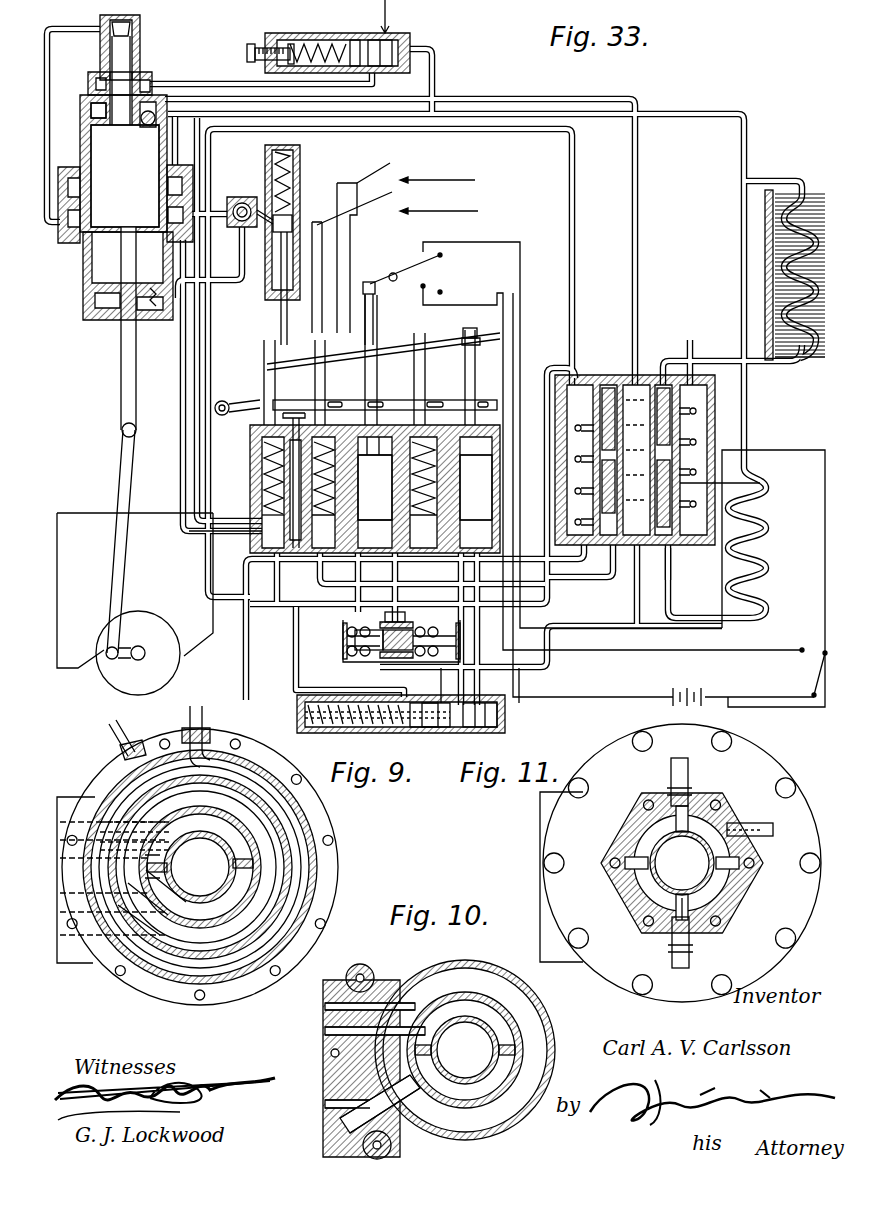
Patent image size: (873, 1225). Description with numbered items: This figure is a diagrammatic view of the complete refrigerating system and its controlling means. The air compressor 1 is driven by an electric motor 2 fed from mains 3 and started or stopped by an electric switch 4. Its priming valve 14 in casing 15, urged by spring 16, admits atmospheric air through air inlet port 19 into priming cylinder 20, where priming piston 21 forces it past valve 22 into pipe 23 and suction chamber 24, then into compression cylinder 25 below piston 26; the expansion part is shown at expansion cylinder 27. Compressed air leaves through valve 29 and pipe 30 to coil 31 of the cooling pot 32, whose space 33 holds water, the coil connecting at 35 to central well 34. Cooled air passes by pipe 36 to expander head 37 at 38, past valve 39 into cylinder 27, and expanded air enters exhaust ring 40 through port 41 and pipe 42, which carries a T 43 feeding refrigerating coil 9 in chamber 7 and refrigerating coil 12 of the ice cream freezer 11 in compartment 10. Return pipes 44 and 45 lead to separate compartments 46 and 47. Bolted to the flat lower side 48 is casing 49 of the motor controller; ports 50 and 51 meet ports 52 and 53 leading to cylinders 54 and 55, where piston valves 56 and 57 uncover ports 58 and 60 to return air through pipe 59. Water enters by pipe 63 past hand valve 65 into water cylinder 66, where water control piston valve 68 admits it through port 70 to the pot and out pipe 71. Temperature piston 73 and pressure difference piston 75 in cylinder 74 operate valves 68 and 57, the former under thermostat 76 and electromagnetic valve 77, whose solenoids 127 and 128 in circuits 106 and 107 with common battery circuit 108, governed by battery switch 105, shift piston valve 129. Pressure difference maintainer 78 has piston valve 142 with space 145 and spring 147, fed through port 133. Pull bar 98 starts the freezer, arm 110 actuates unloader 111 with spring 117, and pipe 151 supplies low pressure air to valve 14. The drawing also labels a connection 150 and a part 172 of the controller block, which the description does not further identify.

In FIG. 33, the air compressor 1 is at (115, 185).
In FIG. 33, the electric motor 2 is at (135, 559).
In FIG. 33, the mains 3 is at (398, 255).
In FIG. 33, the electric switch 4 is at (354, 244).
In FIG. 33, the refrigerating chamber 7 is at (773, 578).
In FIG. 33, the refrigerating coil 9 is at (726, 536).
In FIG. 33, the compartment 10 is at (759, 275).
In FIG. 33, the ice cream freezer 11 is at (800, 383).
In FIG. 33, the refrigerating coil 12 is at (800, 253).
In FIG. 33, the priming valve 14 is at (348, 36).
In FIG. 33, the casing 15 is at (325, 36).
In FIG. 33, the spring 16 is at (270, 35).
In FIG. 33, the air inlet port 19 is at (382, 36).
In FIG. 33, the priming cylinder 20 is at (139, 70).
In FIG. 33, the priming piston 21 is at (120, 84).
In FIG. 33, the valve 22 is at (146, 28).
In FIG. 33, the pipe 23 is at (73, 125).
In FIG. 33, the suction chamber 24 is at (55, 211).
In FIG. 33, the compression cylinder 25 is at (113, 276).
In FIG. 33, the piston 26 is at (125, 176).
In FIG. 33, the expansion cylinder 27 is at (117, 278).
In FIG. 33, the valve 29 is at (158, 318).
In FIG. 33, the pipe 30 is at (410, 363).
In FIG. 9, the pipe 30 is at (211, 734).
In FIG. 33, the coil 31 is at (595, 427).
In FIG. 9, the coil 31 is at (244, 867).
In FIG. 33, the cooling pot 32 is at (656, 428).
In FIG. 9, the cooling pot 32 is at (226, 867).
In FIG. 33, the space 33 is at (649, 460).
In FIG. 33, the central well 34 is at (637, 450).
In FIG. 9, the central well 34 is at (200, 867).
In FIG. 11, the central well 34 is at (682, 863).
In FIG. 33, the connection 35 is at (675, 581).
In FIG. 33, the pipe 36 is at (417, 242).
In FIG. 11, the pipe 36 is at (694, 781).
In FIG. 33, the expander head 37 is at (78, 108).
In FIG. 33, the joint 38 is at (261, 90).
In FIG. 33, the valve 39 is at (143, 135).
In FIG. 33, the exhaust ring 40 is at (199, 203).
In FIG. 33, the port 41 is at (187, 243).
In FIG. 33, the pipe 42 is at (456, 267).
In FIG. 33, the T 43 is at (757, 267).
In FIG. 33, the return pipe 44 is at (732, 360).
In FIG. 11, the return pipe 44 is at (701, 942).
In FIG. 33, the return pipe 45 is at (685, 566).
In FIG. 11, the return pipe 45 is at (760, 818).
In FIG. 33, the compartment 46 is at (713, 446).
In FIG. 9, the compartment 46 is at (196, 895).
In FIG. 11, the compartment 46 is at (681, 905).
In FIG. 10, the compartment 46 is at (465, 1061).
In FIG. 33, the compartment 47 is at (744, 478).
In FIG. 9, the compartment 47 is at (194, 864).
In FIG. 11, the compartment 47 is at (694, 863).
In FIG. 10, the compartment 47 is at (465, 1050).
In FIG. 9, the lower side 48 is at (196, 867).
In FIG. 11, the lower side 48 is at (665, 863).
In FIG. 10, the lower side 48 is at (420, 1059).
In FIG. 33, the casing 49 is at (360, 489).
In FIG. 9, the port 50 is at (124, 951).
In FIG. 10, the port 50 is at (355, 1109).
In FIG. 9, the port 51 is at (113, 795).
In FIG. 10, the port 51 is at (353, 1015).
In FIG. 33, the port 52 is at (229, 346).
In FIG. 33, the port 53 is at (476, 487).
In FIG. 33, the cylinder 54 is at (252, 478).
In FIG. 33, the cylinder 55 is at (454, 380).
In FIG. 33, the piston valve 56 is at (273, 526).
In FIG. 33, the piston valve 57 is at (423, 486).
In FIG. 33, the port 58 is at (225, 543).
In FIG. 33, the pipe 59 is at (205, 385).
In FIG. 33, the port 60 is at (375, 528).
In FIG. 33, the pipe 63 is at (415, 622).
In FIG. 33, the hand valve 65 is at (293, 461).
In FIG. 33, the water cylinder 66 is at (385, 411).
In FIG. 33, the water control piston valve 68 is at (323, 490).
In FIG. 33, the port 70 is at (445, 625).
In FIG. 33, the pipe 71 is at (693, 350).
In FIG. 9, the pipe 71 is at (131, 736).
In FIG. 33, the temperature piston 73 is at (375, 487).
In FIG. 33, the cylinder 74 is at (481, 375).
In FIG. 33, the pressure difference piston 75 is at (476, 502).
In FIG. 33, the thermostat 76 is at (808, 674).
In FIG. 33, the electromagnetic valve 77 is at (385, 613).
In FIG. 33, the pressure difference maintainer 78 is at (489, 713).
In FIG. 33, the pull bar 98 is at (237, 393).
In FIG. 33, the battery switch 105 is at (402, 290).
In FIG. 33, the circuit 106 is at (572, 424).
In FIG. 33, the circuit 107 is at (612, 467).
In FIG. 33, the battery circuit 108 is at (622, 481).
In FIG. 33, the arm 110 is at (382, 360).
In FIG. 33, the unloader 111 is at (279, 263).
In FIG. 33, the spring 117 is at (303, 221).
In FIG. 33, the solenoid 127 is at (350, 652).
In FIG. 33, the solenoid 128 is at (551, 646).
In FIG. 33, the piston valve 129 is at (384, 640).
In FIG. 9, the port 133 is at (115, 791).
In FIG. 10, the port 133 is at (348, 1041).
In FIG. 33, the piston valve 142 is at (430, 713).
In FIG. 33, the space 145 is at (475, 446).
In FIG. 33, the spring 147 is at (400, 726).
In FIG. 33, the pipe 150 is at (412, 486).
In FIG. 33, the pipe 151 is at (441, 72).
In FIG. 33, the piston 172 is at (375, 458).